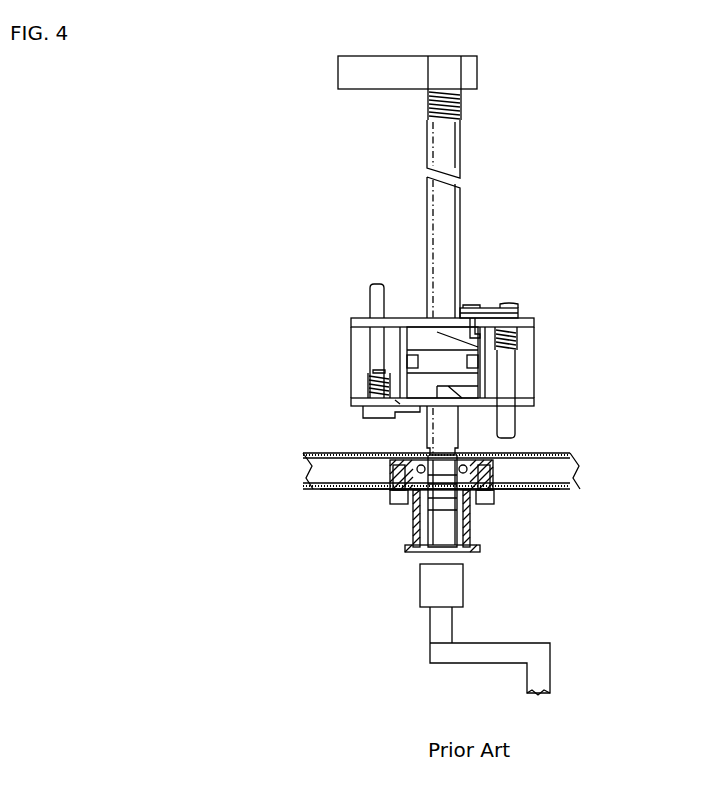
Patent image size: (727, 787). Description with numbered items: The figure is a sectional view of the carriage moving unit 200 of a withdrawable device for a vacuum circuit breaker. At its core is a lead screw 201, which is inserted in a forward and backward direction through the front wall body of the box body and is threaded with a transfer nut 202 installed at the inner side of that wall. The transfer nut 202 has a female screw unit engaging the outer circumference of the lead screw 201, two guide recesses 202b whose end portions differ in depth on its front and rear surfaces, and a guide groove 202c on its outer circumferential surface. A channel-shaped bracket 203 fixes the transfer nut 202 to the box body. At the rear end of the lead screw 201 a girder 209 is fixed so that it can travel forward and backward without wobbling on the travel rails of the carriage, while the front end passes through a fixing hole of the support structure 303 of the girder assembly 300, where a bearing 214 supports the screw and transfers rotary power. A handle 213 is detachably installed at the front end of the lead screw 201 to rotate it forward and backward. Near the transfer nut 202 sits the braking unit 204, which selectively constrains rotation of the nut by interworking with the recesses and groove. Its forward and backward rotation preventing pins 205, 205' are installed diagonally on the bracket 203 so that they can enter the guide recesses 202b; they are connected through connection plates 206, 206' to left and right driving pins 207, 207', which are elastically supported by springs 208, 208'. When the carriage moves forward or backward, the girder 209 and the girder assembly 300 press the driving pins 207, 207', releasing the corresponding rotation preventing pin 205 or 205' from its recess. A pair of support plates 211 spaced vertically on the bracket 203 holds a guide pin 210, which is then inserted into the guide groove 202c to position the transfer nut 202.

The carriage moving unit 200 is at (518, 223).
The lead screw 201 is at (453, 200).
The transfer nut 202 is at (438, 340).
The guide recess 202b is at (462, 282).
The guide groove 202c is at (421, 360).
The channel-shaped bracket 203 is at (528, 320).
The braking unit 204 is at (502, 297).
The forward rotation preventing pin 205 is at (376, 426).
The backward rotation preventing pin 205' is at (481, 304).
The connection plate 206 is at (375, 420).
The connection plate 206' is at (509, 293).
The left driving pin 207 is at (347, 341).
The right driving pin 207' is at (534, 394).
The spring 208 is at (348, 386).
The spring 208' is at (535, 338).
The girder 209 is at (374, 84).
The guide pin 210 is at (412, 359).
The support plate 211 is at (407, 352).
The handle 213 is at (436, 614).
The bearing 214 is at (483, 498).
The girder assembly 300 is at (565, 495).
The support structure 303 is at (525, 493).